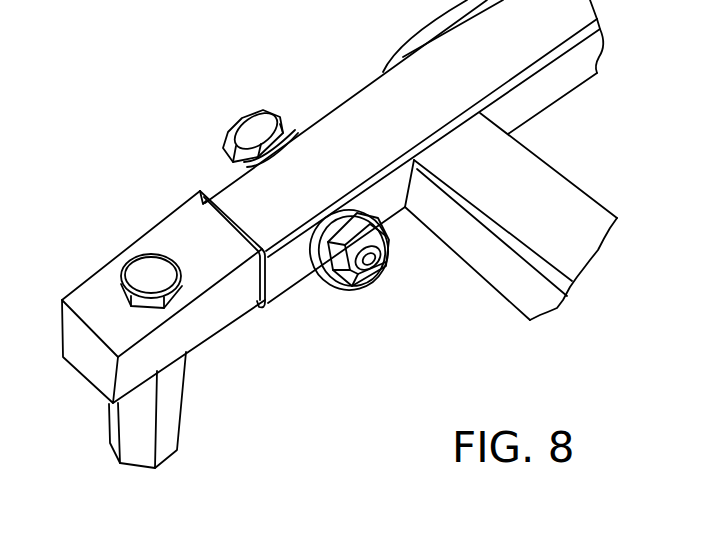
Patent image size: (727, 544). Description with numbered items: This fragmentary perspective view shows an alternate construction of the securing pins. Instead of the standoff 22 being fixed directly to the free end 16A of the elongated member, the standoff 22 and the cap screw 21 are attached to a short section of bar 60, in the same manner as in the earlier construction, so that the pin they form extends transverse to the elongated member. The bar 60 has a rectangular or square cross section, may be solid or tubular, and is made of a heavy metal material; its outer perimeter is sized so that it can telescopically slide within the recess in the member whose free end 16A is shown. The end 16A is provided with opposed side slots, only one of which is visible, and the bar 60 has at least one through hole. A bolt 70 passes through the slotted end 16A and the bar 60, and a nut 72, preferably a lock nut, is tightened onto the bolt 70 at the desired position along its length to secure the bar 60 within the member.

The free end of elongated member 16A is at (352, 110).
The bar 60 is at (183, 233).
The cap screw 21 is at (140, 278).
The bolt 70 is at (243, 128).
The nut 72 is at (332, 272).
The standoff 22 is at (112, 425).